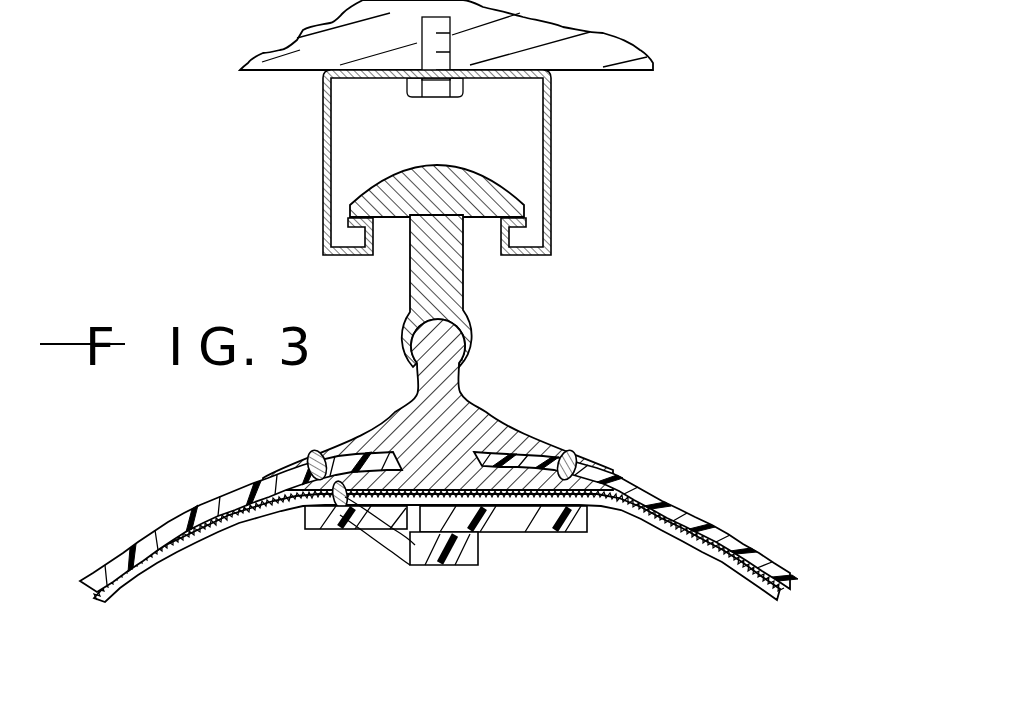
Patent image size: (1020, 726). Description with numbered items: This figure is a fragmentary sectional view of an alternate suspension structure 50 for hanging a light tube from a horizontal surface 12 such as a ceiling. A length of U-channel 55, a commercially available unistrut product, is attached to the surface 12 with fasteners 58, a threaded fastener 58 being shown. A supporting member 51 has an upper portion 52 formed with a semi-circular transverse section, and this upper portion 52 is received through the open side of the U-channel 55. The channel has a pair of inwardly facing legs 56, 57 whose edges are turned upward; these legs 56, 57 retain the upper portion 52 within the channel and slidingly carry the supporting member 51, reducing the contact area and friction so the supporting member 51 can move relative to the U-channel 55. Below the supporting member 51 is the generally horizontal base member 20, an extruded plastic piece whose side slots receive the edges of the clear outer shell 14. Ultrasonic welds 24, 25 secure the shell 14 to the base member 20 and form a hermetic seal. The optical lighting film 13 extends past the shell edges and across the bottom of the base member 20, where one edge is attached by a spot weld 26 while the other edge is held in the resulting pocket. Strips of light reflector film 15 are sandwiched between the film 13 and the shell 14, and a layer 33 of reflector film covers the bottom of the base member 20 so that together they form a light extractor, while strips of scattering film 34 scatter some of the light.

The horizontal surface 12 is at (640, 73).
The optical lighting film 13 is at (110, 593).
The outer shell 14 is at (90, 560).
The light reflector film 15 is at (167, 550).
The base member 20 is at (457, 413).
The ultrasonic weld 24 is at (313, 440).
The ultrasonic weld 25 is at (567, 450).
The spot weld 26 is at (343, 513).
The layer of light reflector film 33 is at (593, 497).
The scattering film 34 is at (390, 570).
The suspension structure 50 is at (633, 320).
The supporting member 51 is at (463, 282).
The upper portion 52 is at (438, 173).
The U-channel 55 is at (550, 143).
The inwardly facing leg 56 is at (345, 257).
The inwardly facing leg 57 is at (527, 258).
The fastener 58 is at (432, 92).